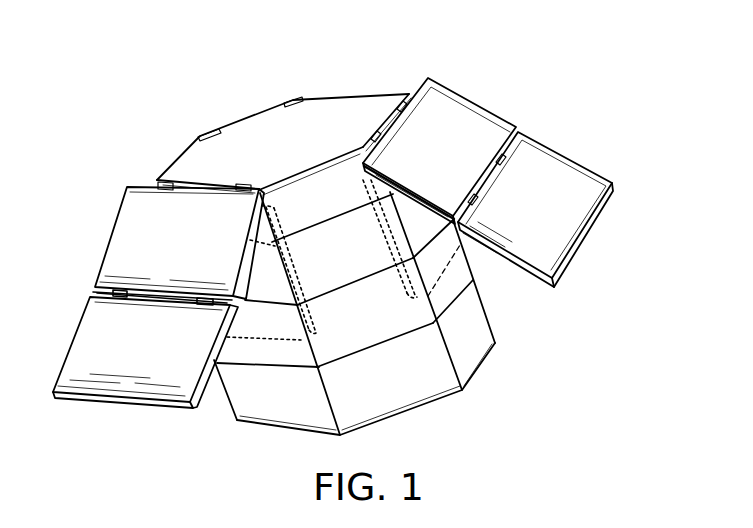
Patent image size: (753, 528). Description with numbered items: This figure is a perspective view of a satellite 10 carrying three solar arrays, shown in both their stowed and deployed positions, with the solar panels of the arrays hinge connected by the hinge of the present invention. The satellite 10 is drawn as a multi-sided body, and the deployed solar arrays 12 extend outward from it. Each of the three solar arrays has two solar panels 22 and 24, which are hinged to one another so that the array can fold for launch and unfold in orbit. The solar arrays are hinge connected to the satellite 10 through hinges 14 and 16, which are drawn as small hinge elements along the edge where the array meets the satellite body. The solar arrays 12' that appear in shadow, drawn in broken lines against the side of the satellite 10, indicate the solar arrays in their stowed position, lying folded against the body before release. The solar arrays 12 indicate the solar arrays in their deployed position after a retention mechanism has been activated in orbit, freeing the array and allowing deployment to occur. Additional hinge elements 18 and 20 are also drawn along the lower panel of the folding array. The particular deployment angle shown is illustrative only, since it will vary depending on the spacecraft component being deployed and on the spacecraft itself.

The satellite 10 is at (456, 30).
The solar arrays 12 is at (151, 297).
The solar arrays 12' is at (322, 297).
The hinge 14 is at (167, 193).
The hinge 16 is at (243, 193).
The lower lid panel 18 is at (120, 299).
The hinge 20 is at (207, 308).
The solar panel 22 is at (483, 108).
The solar panel 24 is at (578, 161).